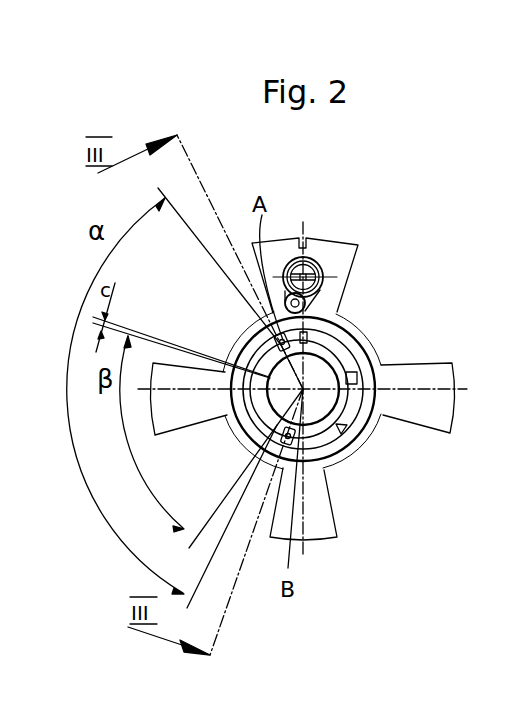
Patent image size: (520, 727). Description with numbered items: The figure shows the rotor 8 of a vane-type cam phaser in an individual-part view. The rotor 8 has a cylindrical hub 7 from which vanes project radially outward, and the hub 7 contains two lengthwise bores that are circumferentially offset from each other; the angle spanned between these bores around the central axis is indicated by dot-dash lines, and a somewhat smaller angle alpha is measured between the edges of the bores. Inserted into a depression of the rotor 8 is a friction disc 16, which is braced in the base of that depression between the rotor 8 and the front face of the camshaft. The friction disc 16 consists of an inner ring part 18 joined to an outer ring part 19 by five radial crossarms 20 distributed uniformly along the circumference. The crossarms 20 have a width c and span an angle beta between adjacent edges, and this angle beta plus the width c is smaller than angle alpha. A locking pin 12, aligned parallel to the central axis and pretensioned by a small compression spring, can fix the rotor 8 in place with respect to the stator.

The hub 7 is at (355, 381).
The rotor 8 is at (343, 481).
The locking pin 12 is at (311, 260).
The friction disc 16 is at (388, 407).
The inner ring part 18 is at (328, 358).
The outer ring part 19 is at (355, 360).
The radial crossarms 20 is at (343, 429).